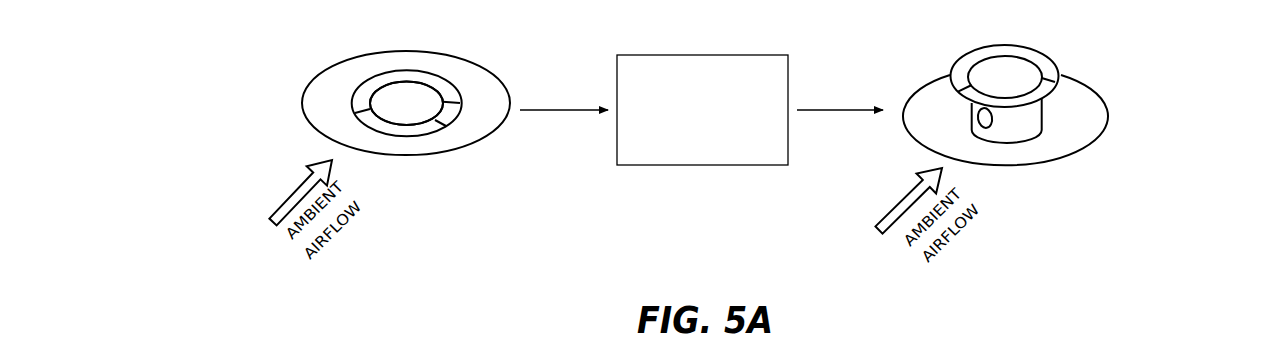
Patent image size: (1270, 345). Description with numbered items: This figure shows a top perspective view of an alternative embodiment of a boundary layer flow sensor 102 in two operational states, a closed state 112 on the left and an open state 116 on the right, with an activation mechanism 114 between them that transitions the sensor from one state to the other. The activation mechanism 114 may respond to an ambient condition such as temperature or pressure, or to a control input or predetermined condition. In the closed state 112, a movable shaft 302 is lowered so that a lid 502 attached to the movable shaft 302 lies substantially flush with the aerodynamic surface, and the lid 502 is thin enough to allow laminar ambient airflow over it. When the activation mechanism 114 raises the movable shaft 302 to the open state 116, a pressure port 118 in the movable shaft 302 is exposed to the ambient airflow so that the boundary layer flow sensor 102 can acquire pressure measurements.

The boundary layer flow sensor 102 is at (247, 344).
The closed state 112 is at (290, 106).
The activation mechanism 114 is at (702, 110).
The open state 116 is at (1137, 103).
The pressure port 118 is at (975, 133).
The movable shaft 302 is at (1027, 122).
The lid 502 is at (438, 118).